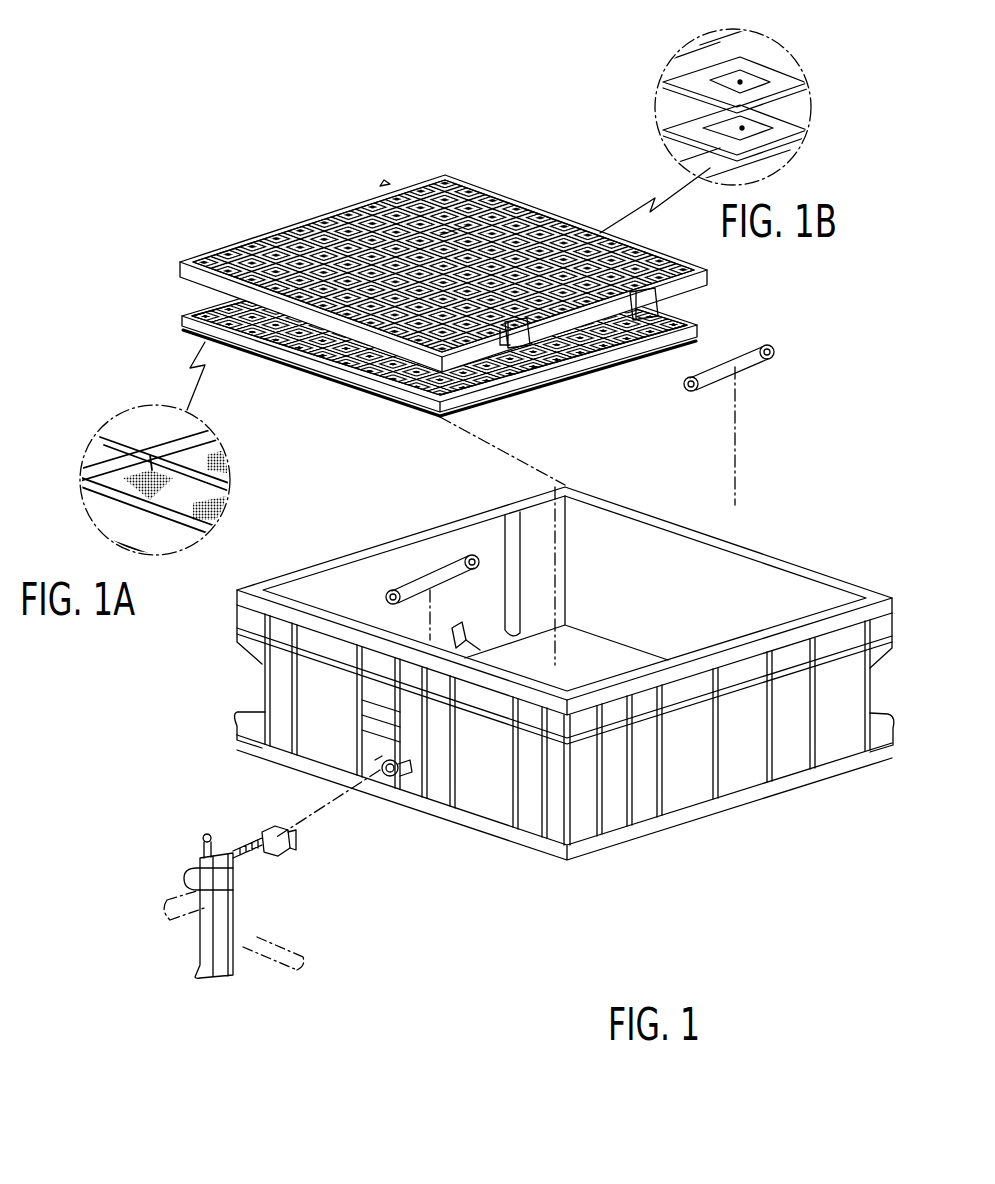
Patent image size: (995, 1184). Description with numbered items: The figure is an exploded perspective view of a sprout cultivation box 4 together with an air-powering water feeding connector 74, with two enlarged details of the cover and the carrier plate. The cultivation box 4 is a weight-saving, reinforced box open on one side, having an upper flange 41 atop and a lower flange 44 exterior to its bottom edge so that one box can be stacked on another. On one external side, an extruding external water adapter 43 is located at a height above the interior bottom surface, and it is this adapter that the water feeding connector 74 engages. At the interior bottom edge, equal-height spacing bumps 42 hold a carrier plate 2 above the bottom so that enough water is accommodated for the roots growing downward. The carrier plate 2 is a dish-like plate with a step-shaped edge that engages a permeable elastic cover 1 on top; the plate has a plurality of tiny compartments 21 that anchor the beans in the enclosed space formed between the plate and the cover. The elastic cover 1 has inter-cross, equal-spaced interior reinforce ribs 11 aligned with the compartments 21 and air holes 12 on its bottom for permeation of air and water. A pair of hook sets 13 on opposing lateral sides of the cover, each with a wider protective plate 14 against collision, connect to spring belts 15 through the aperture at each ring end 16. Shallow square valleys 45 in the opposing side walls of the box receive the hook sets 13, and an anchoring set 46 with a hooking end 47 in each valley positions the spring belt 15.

In FIG. 1, the permeable elastic cover 1 is at (447, 140).
In FIG. 1, the carrier plate 2 is at (180, 320).
In FIG. 1, the interior reinforce ribs 11 is at (512, 192).
In FIG. 1B, the interior reinforce ribs 11 is at (790, 108).
In FIG. 1B, the air holes 12 is at (745, 82).
In FIG. 1, the hook set 13 is at (383, 183).
In FIG. 1, the protective plate 14 is at (655, 296).
In FIG. 1, the spring belt 15 is at (745, 380).
In FIG. 1, the ring end 16 is at (775, 350).
In FIG. 1A, the compartment 21 is at (215, 470).
In FIG. 1, the cultivation box 4 is at (512, 701).
In FIG. 1, the upper flange 41 is at (245, 598).
In FIG. 1, the spacing bumps 42 is at (520, 620).
In FIG. 1, the external water adapter 43 is at (390, 778).
In FIG. 1, the lower flange 44 is at (668, 860).
In FIG. 1, the square valley 45 is at (385, 575).
In FIG. 1, the anchoring set 46 is at (460, 638).
In FIG. 1, the hooking end 47 is at (480, 648).
In FIG. 1, the air-powering water feeding connector 74 is at (195, 845).